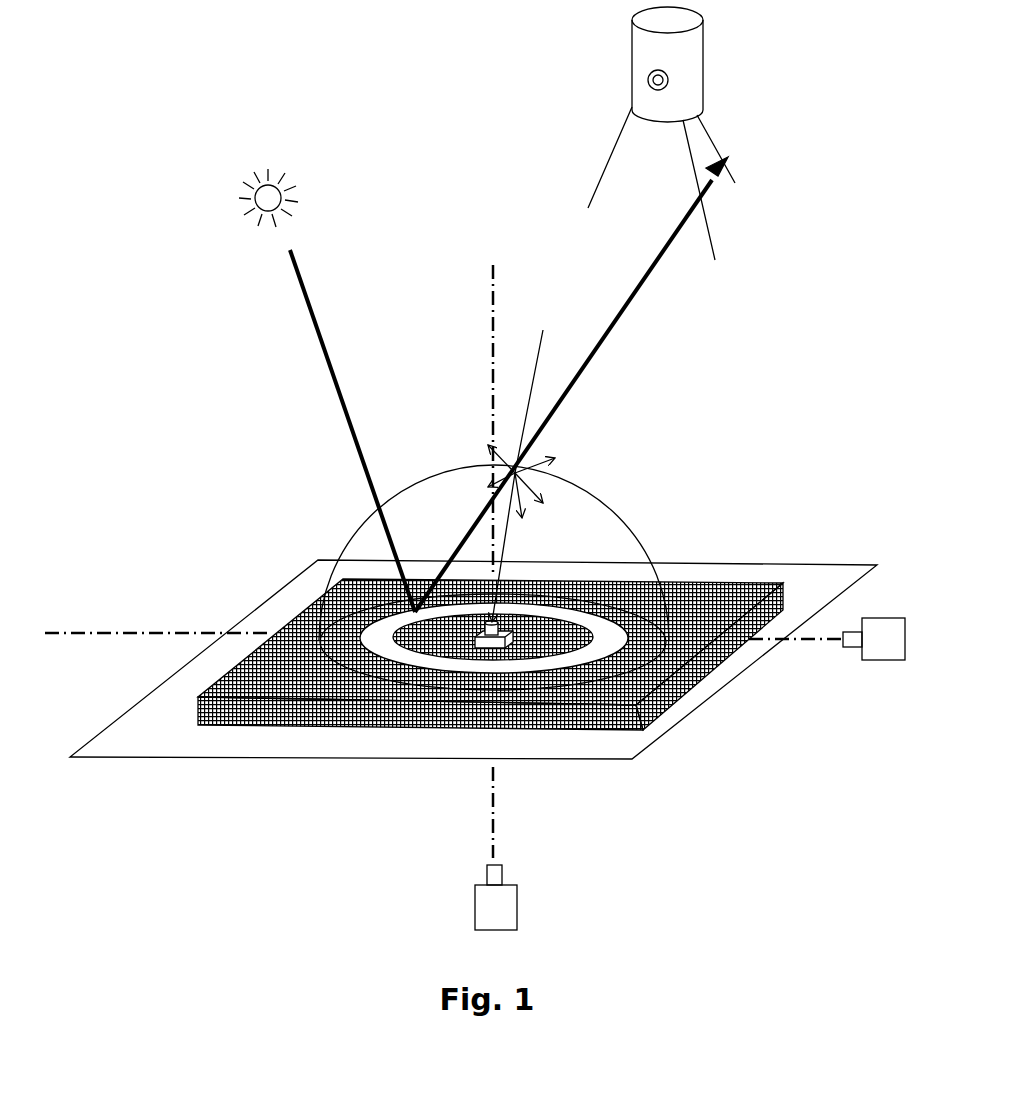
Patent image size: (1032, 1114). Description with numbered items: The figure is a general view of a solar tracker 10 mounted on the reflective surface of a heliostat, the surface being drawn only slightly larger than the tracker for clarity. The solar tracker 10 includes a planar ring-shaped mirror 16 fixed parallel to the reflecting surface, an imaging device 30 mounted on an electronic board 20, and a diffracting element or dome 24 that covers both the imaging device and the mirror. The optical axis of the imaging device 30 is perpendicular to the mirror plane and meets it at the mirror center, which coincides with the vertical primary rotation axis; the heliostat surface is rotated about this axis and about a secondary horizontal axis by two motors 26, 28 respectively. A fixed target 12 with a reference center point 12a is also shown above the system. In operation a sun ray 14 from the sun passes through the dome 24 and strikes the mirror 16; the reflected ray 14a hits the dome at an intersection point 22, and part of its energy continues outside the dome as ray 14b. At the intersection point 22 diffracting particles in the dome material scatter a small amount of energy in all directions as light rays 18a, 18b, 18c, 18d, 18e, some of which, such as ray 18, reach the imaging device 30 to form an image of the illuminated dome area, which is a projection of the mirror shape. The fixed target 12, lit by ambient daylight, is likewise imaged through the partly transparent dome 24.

The solar tracker 10 is at (333, 530).
The fixed target 12 is at (593, 58).
The reference center point 12a is at (648, 80).
The sun ray 14 is at (313, 308).
The reflected ray 14a is at (485, 620).
The ray 14b is at (637, 280).
The planar ring-shaped mirror 16 is at (575, 665).
The ray 18 is at (500, 622).
The light ray 18a is at (488, 485).
The light ray 18b is at (488, 447).
The light ray 18c is at (557, 450).
The light ray 18d is at (550, 468).
The light ray 18e is at (535, 488).
The electronic board 20 is at (300, 613).
The intersection point 22 is at (526, 461).
The diffracting element or dome 24 is at (633, 532).
The motor 26 is at (858, 665).
The motor 28 is at (528, 897).
The imaging device 30 is at (362, 668).